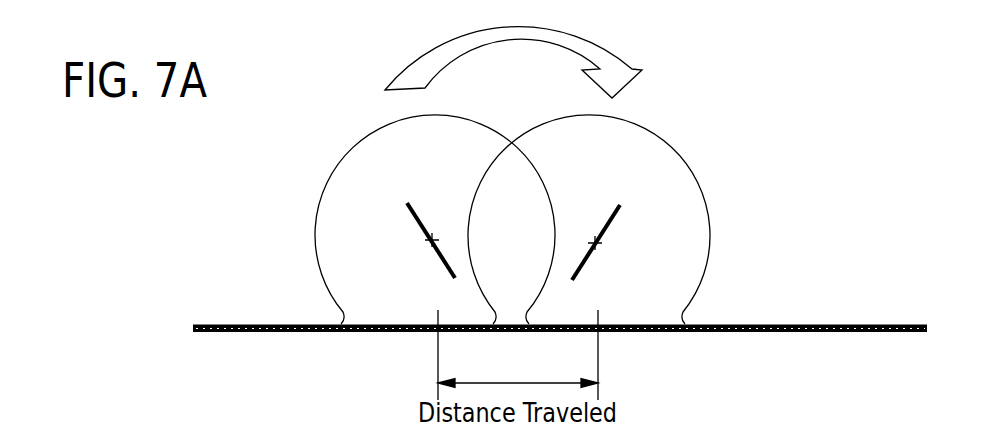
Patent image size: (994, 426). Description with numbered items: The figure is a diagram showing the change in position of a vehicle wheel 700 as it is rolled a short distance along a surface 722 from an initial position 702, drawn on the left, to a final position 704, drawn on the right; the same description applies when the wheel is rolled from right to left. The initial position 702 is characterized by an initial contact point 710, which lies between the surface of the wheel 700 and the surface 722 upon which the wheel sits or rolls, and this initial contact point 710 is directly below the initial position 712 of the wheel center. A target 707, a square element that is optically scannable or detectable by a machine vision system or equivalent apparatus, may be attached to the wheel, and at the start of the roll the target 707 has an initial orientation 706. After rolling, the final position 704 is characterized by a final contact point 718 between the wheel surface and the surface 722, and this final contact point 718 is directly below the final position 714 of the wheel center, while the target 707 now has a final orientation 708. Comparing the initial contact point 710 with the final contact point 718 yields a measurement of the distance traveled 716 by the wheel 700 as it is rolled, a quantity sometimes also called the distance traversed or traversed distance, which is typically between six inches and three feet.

The vehicle wheel 700 is at (352, 130).
The initial position 702 is at (310, 207).
The final position 704 is at (717, 203).
The initial orientation 706 is at (449, 268).
The target 707 is at (602, 210).
The final orientation 708 is at (583, 266).
The initial contact point 710 is at (438, 330).
The initial position of the wheel center 712 is at (432, 240).
The final position of the wheel center 714 is at (596, 243).
The distance traveled 716 is at (518, 370).
The final contact point 718 is at (598, 328).
The surface 722 is at (267, 324).